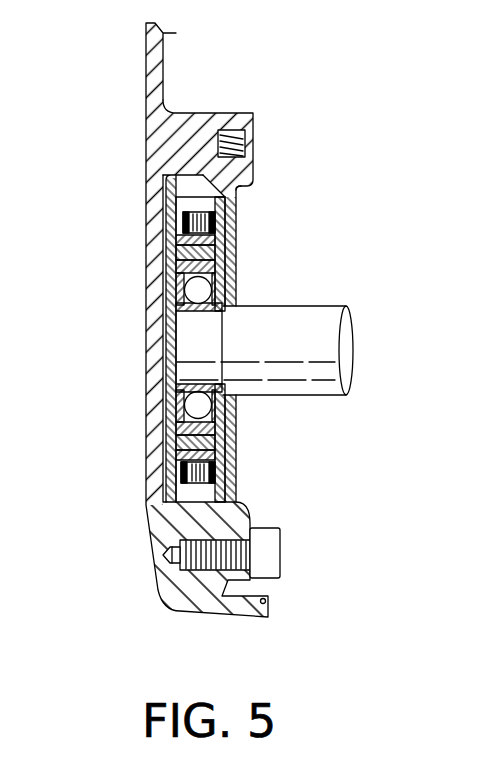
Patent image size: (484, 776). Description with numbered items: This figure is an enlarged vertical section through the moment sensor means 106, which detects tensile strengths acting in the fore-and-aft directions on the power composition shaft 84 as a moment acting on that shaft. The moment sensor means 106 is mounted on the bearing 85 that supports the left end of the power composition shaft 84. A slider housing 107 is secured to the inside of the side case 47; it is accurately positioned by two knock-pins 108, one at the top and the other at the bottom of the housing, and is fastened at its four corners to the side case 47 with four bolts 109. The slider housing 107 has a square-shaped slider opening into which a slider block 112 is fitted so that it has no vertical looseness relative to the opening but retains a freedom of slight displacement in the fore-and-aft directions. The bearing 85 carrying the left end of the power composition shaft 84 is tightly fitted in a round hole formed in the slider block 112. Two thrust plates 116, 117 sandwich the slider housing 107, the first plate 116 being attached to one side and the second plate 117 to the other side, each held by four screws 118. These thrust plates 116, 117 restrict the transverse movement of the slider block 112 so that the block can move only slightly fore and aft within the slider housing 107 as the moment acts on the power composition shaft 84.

The side case 47 is at (146, 148).
The power composition shaft 84 is at (303, 306).
The bearing 85 is at (188, 285).
The moment sensor means 106 is at (286, 115).
The slider housing 107 is at (248, 180).
The knock-pin 108 is at (237, 140).
The bolt 109 is at (267, 542).
The slider block 112 is at (183, 257).
The thrust plate 116 is at (173, 418).
The thrust plate 117 is at (230, 433).
The screw 118 is at (244, 218).